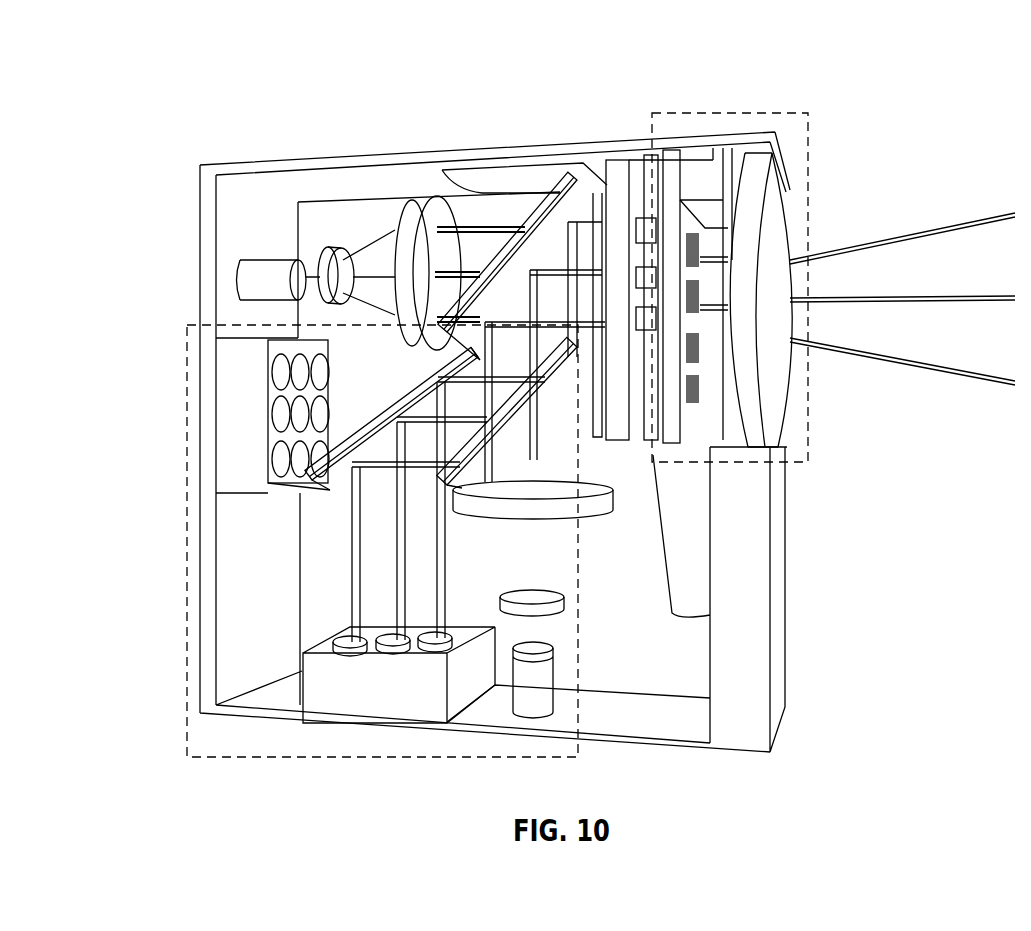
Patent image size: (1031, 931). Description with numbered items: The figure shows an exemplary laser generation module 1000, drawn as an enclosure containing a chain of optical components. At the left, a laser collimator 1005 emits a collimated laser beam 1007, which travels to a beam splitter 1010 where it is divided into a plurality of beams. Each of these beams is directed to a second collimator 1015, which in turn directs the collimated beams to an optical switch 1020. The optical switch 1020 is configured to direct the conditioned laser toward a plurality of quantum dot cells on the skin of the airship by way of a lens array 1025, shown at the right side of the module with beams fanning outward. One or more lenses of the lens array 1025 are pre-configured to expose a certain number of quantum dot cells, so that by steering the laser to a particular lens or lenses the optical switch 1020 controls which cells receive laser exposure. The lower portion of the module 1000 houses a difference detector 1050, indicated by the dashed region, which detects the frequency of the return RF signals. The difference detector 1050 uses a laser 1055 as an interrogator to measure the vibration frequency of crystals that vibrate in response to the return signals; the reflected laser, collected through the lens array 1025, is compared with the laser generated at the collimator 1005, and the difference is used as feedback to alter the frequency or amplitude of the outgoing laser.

The laser generation module 1000 is at (778, 104).
The laser collimator 1005 is at (247, 257).
The collimated laser beam 1007 is at (316, 250).
The beam splitter 1010 is at (353, 305).
The second collimator 1015 is at (410, 200).
The optical switch 1020 is at (610, 167).
The lens array 1025 is at (808, 142).
The difference detector 1050 is at (187, 567).
The laser 1055 is at (553, 668).